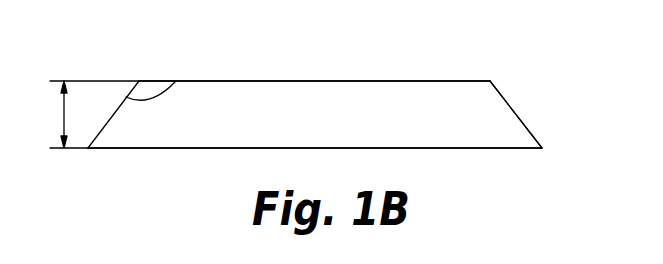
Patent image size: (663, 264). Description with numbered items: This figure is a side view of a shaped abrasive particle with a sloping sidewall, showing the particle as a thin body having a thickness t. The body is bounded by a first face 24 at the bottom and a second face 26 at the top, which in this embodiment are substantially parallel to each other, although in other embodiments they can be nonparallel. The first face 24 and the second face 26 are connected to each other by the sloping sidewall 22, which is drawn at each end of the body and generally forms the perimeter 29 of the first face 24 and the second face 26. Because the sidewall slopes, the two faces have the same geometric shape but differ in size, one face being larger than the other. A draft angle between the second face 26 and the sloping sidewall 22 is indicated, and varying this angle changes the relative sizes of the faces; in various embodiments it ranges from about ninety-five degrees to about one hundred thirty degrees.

The sloping sidewall 22 is at (120, 105).
The first face 24 is at (434, 149).
The second face 26 is at (350, 80).
The perimeter 29 is at (490, 80).
The thickness t is at (64, 112).